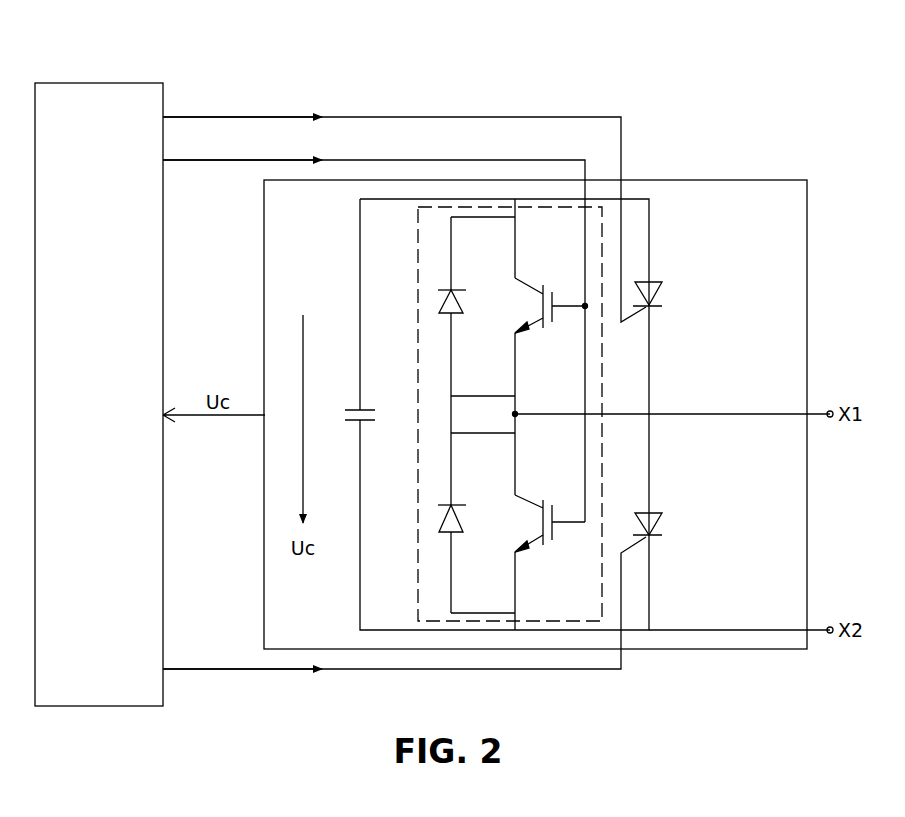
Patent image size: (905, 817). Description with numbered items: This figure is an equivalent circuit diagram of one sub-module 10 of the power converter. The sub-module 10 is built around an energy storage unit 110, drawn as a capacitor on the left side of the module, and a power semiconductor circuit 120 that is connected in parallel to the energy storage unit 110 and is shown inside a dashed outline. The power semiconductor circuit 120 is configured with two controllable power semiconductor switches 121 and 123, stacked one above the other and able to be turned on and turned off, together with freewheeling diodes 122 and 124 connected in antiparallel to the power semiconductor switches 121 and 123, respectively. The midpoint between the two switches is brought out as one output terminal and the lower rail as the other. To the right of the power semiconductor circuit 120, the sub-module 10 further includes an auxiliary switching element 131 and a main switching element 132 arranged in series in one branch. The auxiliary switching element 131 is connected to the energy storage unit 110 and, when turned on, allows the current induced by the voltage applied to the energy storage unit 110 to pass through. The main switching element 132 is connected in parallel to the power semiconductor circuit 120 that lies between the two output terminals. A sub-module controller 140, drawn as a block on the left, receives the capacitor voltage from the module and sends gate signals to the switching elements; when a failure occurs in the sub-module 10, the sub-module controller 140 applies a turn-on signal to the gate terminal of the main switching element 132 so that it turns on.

The sub-module 10 is at (710, 179).
The energy storage unit 110 is at (358, 408).
The power semiconductor circuit 120 is at (418, 246).
The power semiconductor switch 121 is at (552, 292).
The freewheeling diode 122 is at (438, 300).
The power semiconductor switch 123 is at (556, 530).
The freewheeling diode 124 is at (438, 516).
The auxiliary switching element 131 is at (660, 307).
The main switching element 132 is at (650, 540).
The sub-module controller 140 is at (100, 82).